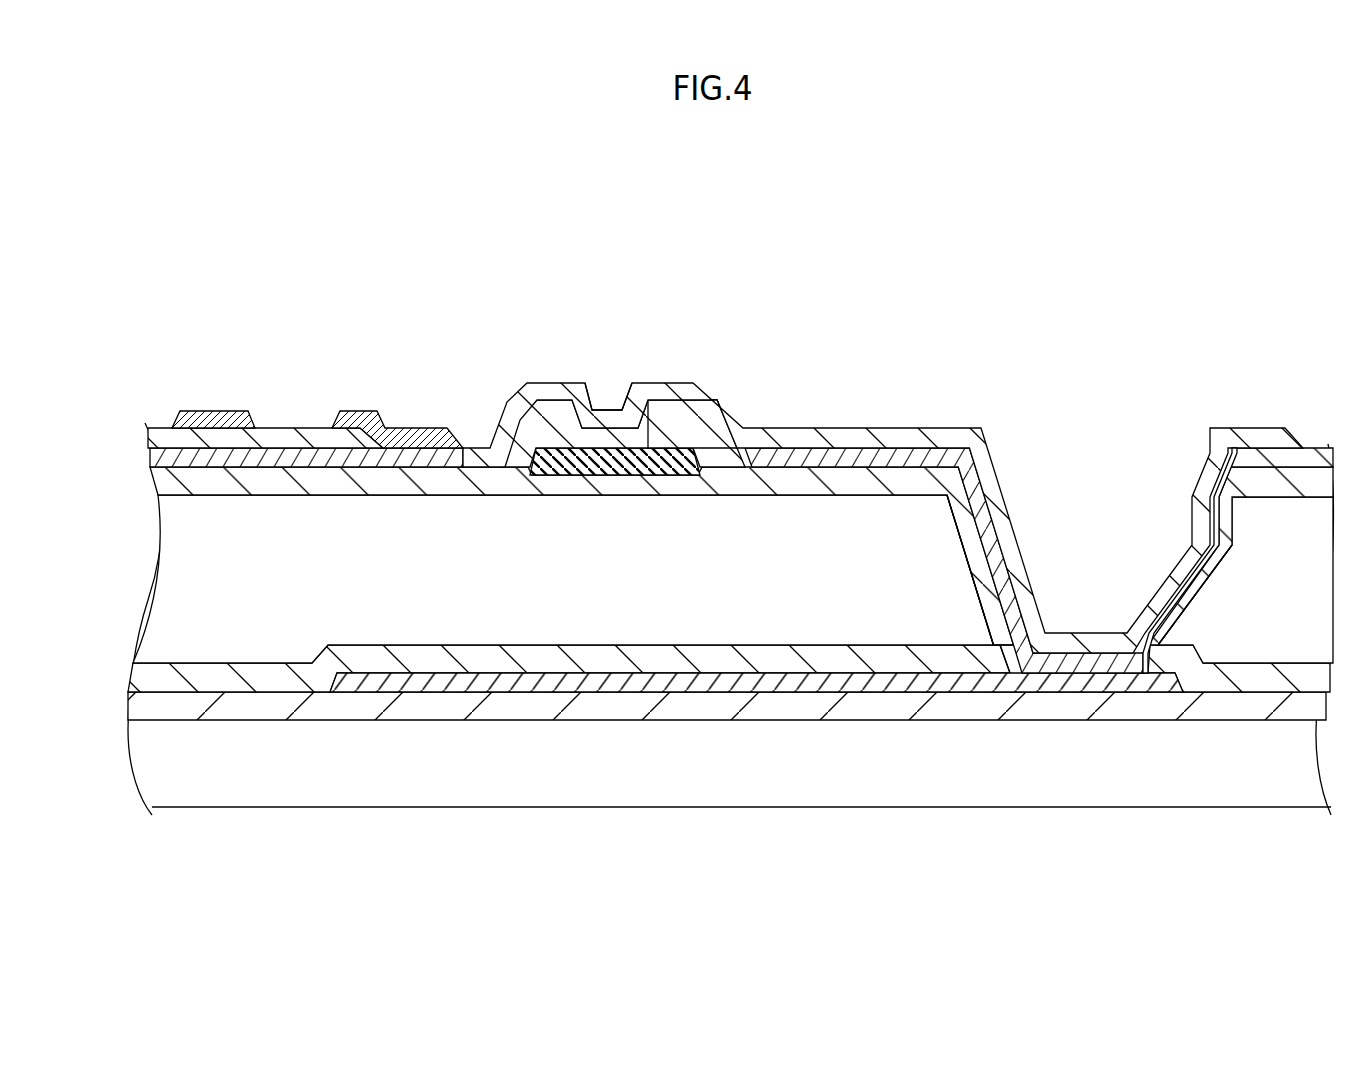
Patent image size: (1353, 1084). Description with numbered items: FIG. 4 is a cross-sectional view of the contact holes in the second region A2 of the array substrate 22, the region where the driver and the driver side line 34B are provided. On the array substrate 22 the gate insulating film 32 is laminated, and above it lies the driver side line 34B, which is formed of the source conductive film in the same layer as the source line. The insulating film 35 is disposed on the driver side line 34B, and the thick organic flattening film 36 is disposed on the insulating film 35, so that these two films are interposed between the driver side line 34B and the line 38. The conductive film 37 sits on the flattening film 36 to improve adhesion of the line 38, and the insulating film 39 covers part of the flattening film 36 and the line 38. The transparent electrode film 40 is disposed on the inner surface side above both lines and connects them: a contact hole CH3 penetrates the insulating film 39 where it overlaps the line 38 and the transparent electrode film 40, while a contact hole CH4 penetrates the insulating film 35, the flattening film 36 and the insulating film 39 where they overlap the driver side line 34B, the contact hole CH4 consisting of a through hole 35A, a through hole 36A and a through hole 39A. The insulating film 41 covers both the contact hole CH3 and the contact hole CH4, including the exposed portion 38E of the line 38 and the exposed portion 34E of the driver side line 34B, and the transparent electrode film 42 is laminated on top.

The second region A2 is at (252, 233).
The array substrate 22 is at (263, 782).
The gate insulating film 32 is at (150, 703).
The insulating film 35 is at (150, 677).
The driver side line 34B is at (540, 692).
The flattening film 36 is at (193, 592).
The insulating film 39 is at (215, 495).
The conductive film 37 is at (684, 480).
The line 38 is at (588, 410).
The exposed portion of the line 38E is at (618, 428).
The transparent electrode film 40 is at (187, 460).
The insulating film 41 is at (150, 425).
The transparent electrode film 42 is at (348, 413).
The exposed portion of the driver side line 34E is at (1120, 636).
The contact hole CH3 is at (589, 410).
The contact hole CH4 is at (970, 357).
The through hole 36A is at (992, 487).
The through hole 39A is at (1052, 628).
The through hole 35A is at (1100, 622).